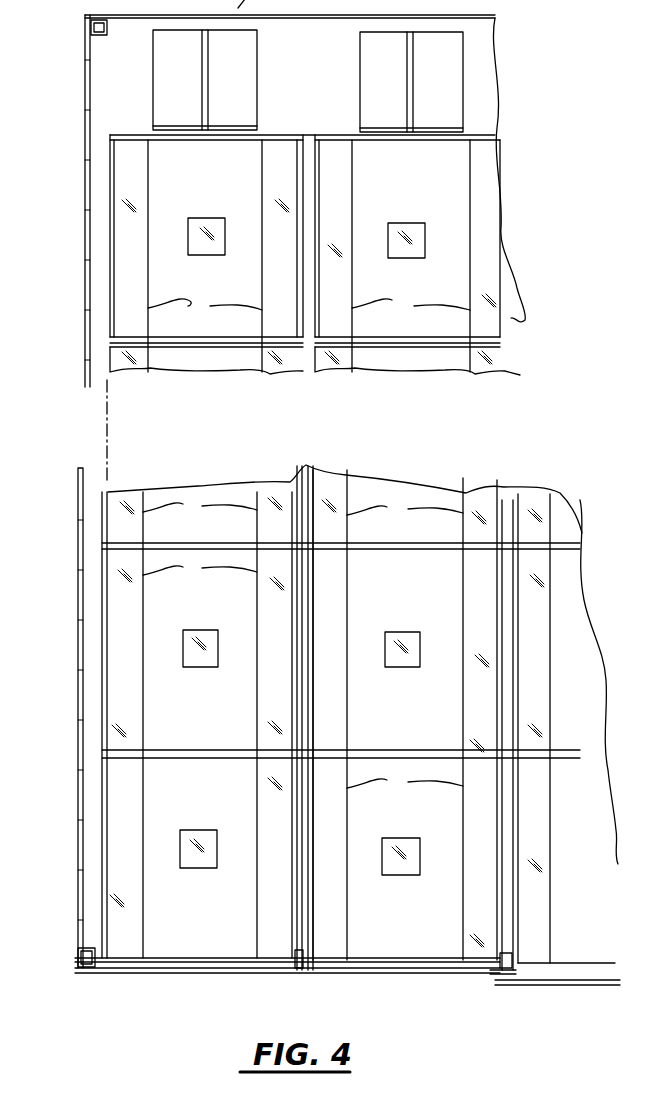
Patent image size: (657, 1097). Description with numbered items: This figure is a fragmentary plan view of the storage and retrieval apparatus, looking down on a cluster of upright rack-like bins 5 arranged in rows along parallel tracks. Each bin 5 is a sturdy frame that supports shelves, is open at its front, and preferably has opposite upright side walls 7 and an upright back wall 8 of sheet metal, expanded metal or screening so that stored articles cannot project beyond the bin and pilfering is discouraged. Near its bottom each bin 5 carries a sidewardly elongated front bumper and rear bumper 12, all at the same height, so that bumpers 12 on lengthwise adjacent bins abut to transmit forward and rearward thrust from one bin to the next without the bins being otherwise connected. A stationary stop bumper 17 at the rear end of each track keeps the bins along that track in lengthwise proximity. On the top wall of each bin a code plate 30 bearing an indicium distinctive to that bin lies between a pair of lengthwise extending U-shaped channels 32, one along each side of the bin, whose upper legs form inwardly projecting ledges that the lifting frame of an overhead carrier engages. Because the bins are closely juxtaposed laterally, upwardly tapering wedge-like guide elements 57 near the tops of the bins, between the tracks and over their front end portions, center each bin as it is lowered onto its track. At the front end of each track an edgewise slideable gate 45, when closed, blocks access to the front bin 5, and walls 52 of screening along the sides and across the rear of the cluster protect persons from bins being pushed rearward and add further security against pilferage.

The bin 5 is at (300, 128).
The side wall 7 is at (312, 784).
The back wall 8 is at (414, 758).
The bumper 12 is at (123, 135).
The stop bumper 17 is at (248, 139).
The code plate 30 is at (206, 255).
The U-shaped channel 32 is at (570, 864).
The gate 45 is at (178, 975).
The wall 52 is at (78, 783).
The guide element 57 is at (294, 956).